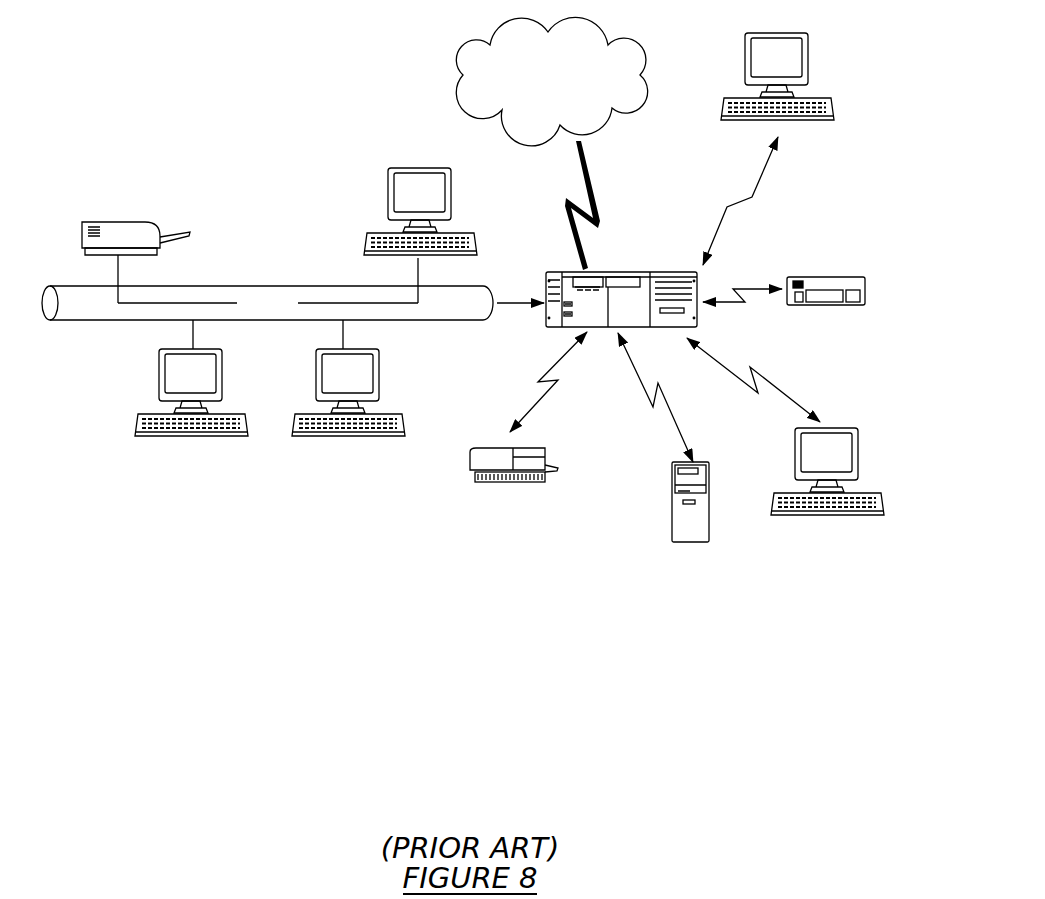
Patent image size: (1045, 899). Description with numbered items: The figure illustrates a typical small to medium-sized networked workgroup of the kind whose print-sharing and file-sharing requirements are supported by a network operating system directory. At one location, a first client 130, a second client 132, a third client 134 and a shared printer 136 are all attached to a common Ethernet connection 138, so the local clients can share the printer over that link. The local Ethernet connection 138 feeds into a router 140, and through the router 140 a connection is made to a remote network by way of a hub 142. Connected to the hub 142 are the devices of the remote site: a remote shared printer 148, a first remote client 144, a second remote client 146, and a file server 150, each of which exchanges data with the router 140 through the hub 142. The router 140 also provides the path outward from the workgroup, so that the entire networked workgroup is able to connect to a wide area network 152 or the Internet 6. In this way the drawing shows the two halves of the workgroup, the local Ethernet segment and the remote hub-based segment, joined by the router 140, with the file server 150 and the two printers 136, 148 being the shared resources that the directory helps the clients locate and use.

The Internet 6 is at (585, 94).
The first client 130 is at (223, 379).
The second client 132 is at (380, 379).
The third client 134 is at (412, 167).
The shared printer 136 is at (118, 223).
The Ethernet connection 138 is at (279, 291).
The router 140 is at (635, 270).
The hub 142 is at (825, 277).
The first remote client 144 is at (808, 65).
The second remote client 146 is at (832, 423).
The remote shared printer 148 is at (500, 485).
The file server 150 is at (708, 505).
The wide area network 152 is at (596, 51).